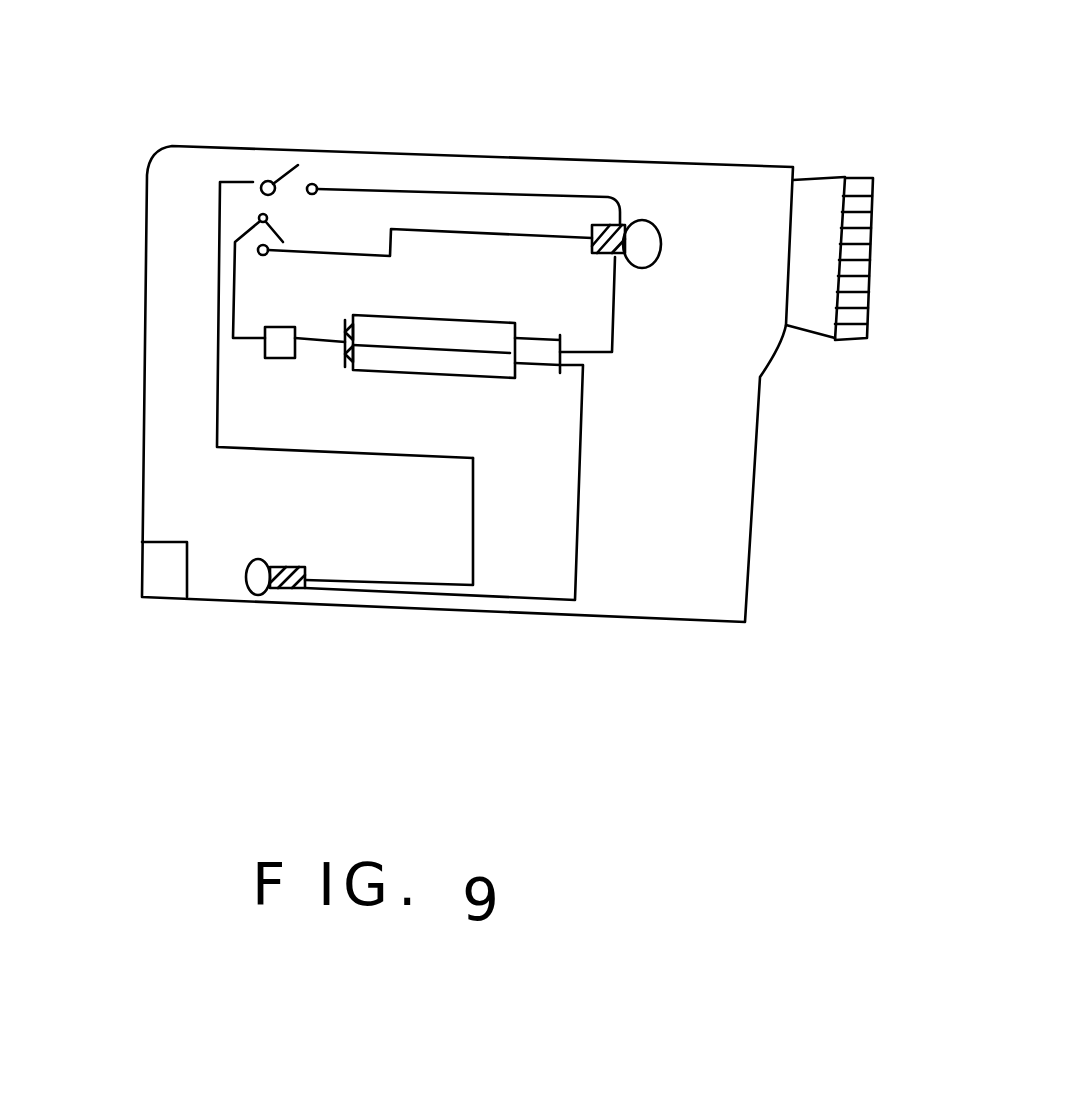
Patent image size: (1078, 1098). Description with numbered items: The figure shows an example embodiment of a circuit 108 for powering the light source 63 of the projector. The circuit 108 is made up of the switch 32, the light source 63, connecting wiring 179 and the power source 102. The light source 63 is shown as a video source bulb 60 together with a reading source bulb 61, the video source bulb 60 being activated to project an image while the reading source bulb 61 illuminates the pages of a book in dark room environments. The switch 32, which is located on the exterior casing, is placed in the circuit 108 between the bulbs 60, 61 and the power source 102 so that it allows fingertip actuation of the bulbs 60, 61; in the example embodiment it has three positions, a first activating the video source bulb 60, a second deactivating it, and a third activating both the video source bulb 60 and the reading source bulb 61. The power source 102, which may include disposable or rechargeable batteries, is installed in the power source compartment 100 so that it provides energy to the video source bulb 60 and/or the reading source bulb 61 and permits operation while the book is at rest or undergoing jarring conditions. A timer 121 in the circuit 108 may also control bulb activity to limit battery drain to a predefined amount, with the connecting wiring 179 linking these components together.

The light source 63 is at (687, 92).
The switch 32 is at (254, 165).
The connecting wiring 179 is at (215, 422).
The timer 121 is at (277, 360).
The power source compartment 100 is at (378, 373).
The power source 102 is at (448, 375).
The video source bulb 60 is at (650, 223).
The circuit 108 is at (578, 502).
The reading source bulb 61 is at (258, 553).